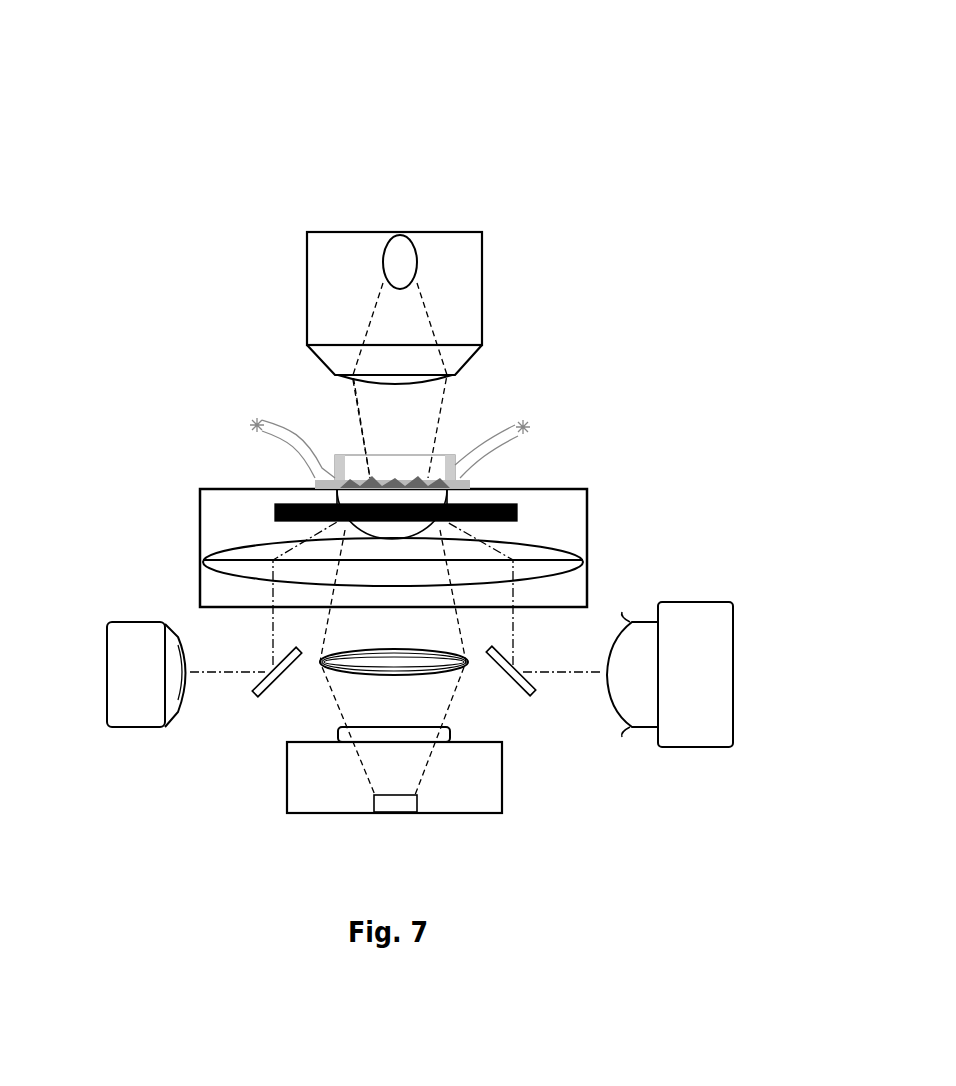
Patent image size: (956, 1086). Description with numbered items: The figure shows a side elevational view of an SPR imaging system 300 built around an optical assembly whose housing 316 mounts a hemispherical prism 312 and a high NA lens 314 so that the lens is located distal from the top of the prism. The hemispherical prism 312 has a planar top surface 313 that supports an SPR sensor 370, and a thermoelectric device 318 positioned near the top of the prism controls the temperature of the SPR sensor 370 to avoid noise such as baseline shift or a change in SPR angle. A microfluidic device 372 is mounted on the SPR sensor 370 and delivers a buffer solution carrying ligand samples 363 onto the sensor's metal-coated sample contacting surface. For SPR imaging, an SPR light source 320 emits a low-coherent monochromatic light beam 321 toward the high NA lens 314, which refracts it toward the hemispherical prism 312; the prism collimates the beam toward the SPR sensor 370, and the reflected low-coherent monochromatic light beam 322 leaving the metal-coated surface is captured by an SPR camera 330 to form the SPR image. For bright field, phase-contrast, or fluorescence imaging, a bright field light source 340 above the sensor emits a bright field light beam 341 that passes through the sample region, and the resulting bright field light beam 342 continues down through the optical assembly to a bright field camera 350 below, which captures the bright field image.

The SPR imaging system 300 is at (184, 189).
The bright field light source 340 is at (504, 238).
The bright field light beam 341 is at (344, 410).
The ligand sample 363 is at (392, 450).
The microfluidic device 372 is at (448, 457).
The SPR sensor 370 is at (478, 480).
The hemispherical prism 312 is at (452, 500).
The thermoelectric device 318 is at (517, 513).
The planar top surface 313 is at (335, 497).
The housing 316 is at (590, 578).
The high NA lens 314 is at (203, 562).
The SPR light source 320 is at (104, 687).
The low-coherent monochromatic light beam 321 is at (223, 686).
The reflected low-coherent monochromatic light beam 322 is at (585, 686).
The SPR camera 330 is at (698, 623).
The bright field light beam 342 is at (472, 683).
The bright field camera 350 is at (438, 793).